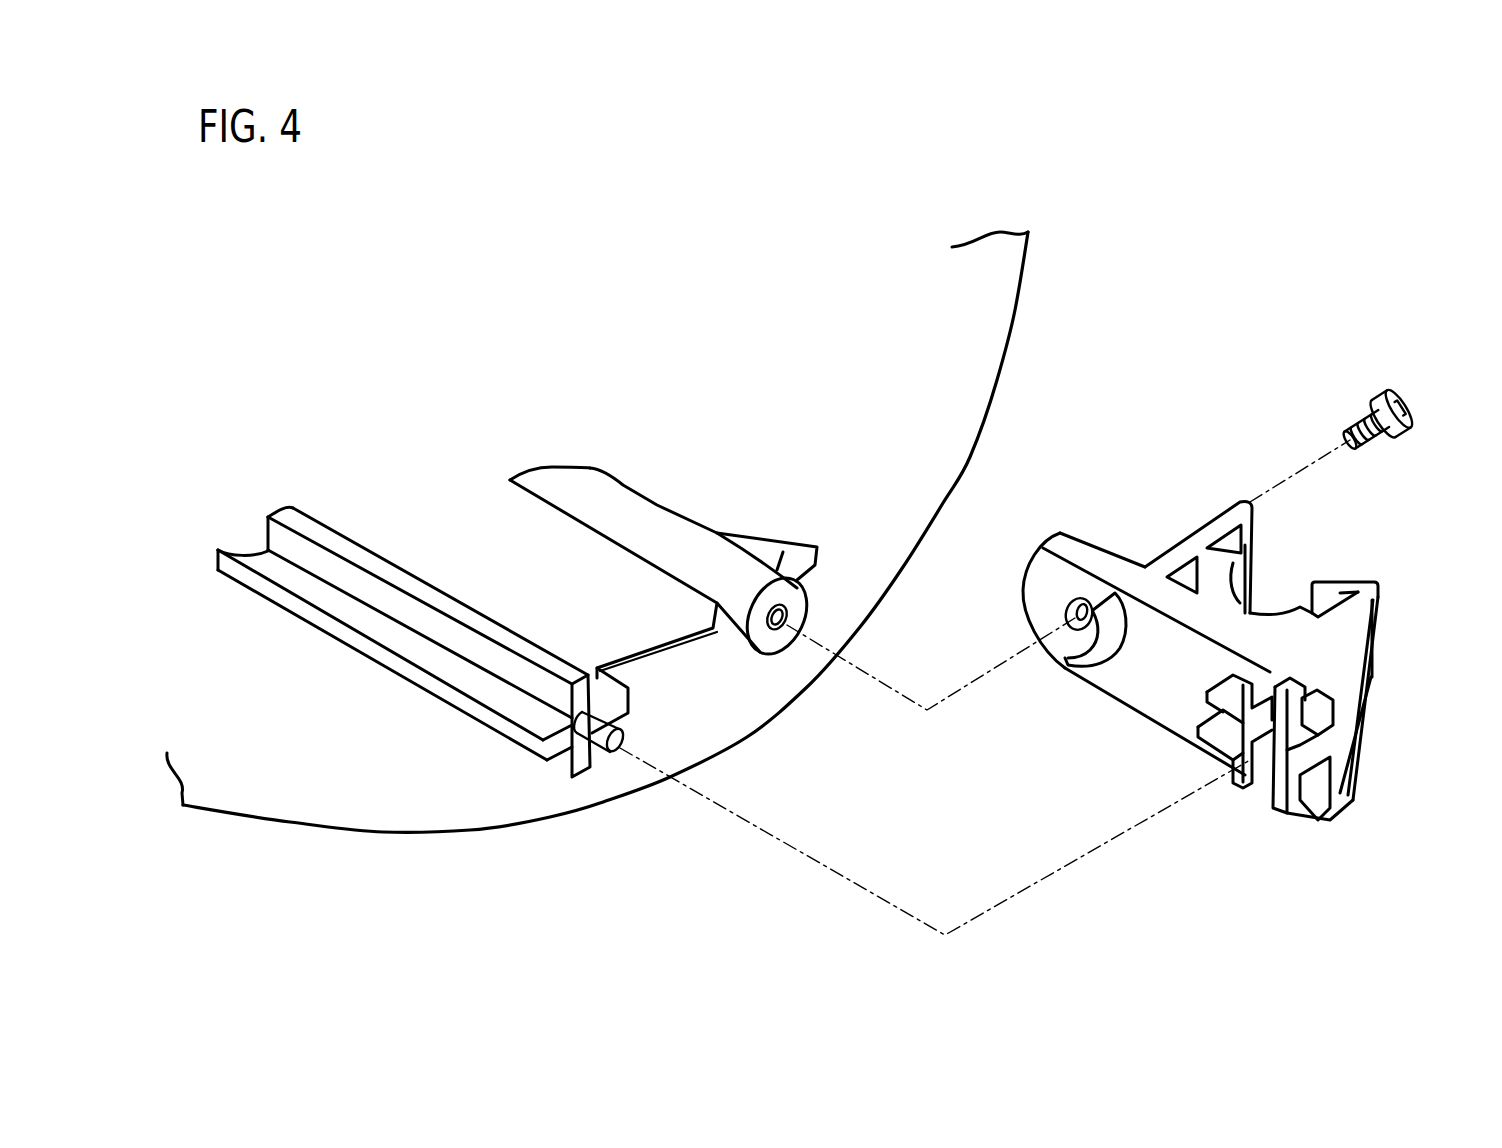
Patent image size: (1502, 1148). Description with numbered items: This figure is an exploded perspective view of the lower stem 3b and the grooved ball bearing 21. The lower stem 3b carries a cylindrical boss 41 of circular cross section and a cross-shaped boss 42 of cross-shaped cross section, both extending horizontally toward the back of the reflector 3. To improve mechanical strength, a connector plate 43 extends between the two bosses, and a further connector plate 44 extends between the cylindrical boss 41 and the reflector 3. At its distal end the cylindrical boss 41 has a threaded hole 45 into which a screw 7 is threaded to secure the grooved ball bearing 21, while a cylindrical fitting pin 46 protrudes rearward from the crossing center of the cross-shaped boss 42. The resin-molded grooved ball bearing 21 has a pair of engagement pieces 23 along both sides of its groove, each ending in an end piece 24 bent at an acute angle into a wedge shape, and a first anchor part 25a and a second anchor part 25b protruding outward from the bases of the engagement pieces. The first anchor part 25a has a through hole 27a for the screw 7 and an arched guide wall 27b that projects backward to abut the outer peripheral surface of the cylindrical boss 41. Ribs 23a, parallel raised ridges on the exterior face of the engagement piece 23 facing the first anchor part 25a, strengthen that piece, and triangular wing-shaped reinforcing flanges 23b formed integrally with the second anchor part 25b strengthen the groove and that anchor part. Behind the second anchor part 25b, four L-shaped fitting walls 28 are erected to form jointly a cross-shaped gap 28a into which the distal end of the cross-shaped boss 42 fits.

The reflector 3 is at (1005, 352).
The lower stem 3b is at (458, 718).
The cylindrical boss 41 is at (706, 594).
The cross-shaped boss 42 is at (565, 760).
The connector plate 43 is at (650, 622).
The connector plate 44 is at (782, 550).
The threaded hole 45 is at (773, 628).
The cylindrical fitting pin 46 is at (612, 752).
The screw 7 is at (1365, 443).
The grooved ball bearing 21 is at (1227, 654).
The engagement piece 23 is at (1350, 608).
The ribs 23a is at (1197, 537).
The reinforcing flanges 23b is at (1347, 653).
The end piece 24 is at (1327, 580).
The first anchor part 25a is at (1085, 546).
The second anchor part 25b is at (1352, 808).
The through hole 27a is at (1045, 644).
The arched guide wall 27b is at (1115, 640).
The L-shaped fitting walls 28 is at (1288, 793).
The cross-shaped gap 28a is at (1252, 763).